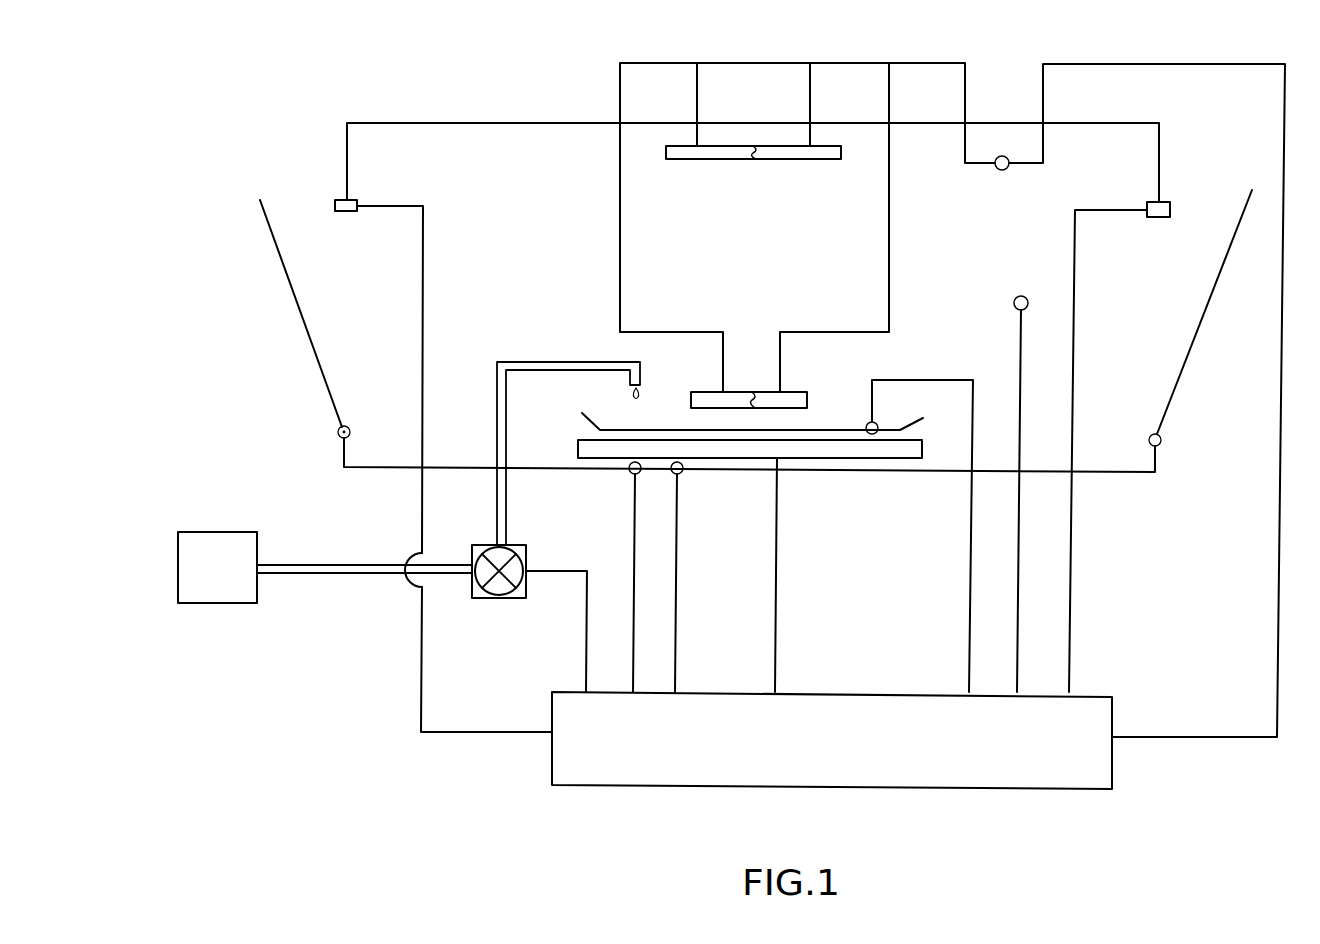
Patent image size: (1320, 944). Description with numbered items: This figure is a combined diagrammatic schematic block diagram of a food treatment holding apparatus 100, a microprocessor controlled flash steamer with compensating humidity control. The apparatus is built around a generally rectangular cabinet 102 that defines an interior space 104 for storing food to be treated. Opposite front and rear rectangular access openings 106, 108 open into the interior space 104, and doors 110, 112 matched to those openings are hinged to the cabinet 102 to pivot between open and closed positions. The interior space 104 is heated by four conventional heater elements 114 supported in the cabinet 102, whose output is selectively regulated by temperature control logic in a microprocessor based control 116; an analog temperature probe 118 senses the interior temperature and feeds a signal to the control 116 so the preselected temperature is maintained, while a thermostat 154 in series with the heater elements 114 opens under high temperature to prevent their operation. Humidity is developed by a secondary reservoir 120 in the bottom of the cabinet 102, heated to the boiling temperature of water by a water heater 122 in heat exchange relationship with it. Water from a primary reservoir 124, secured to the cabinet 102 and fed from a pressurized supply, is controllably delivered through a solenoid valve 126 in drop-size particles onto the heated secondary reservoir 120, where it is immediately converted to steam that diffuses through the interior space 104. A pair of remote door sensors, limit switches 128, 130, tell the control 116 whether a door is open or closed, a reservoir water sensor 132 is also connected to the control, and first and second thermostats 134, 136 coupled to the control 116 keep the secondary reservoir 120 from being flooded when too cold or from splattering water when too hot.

The food treatment holding apparatus 100 is at (473, 102).
The cabinet 102 is at (375, 121).
The interior space 104 is at (528, 162).
The front access opening 106 is at (312, 247).
The rear access opening 108 is at (1186, 255).
The door 110 is at (298, 311).
The door 112 is at (1188, 362).
The heater elements 114 is at (790, 160).
The microprocessor based control 116 is at (1090, 790).
The analog temperature probe 118 is at (1016, 298).
The secondary reservoir 120 is at (923, 418).
The water heater 122 is at (720, 450).
The primary reservoir 124 is at (213, 603).
The solenoid valve 126 is at (480, 598).
The limit switch 128 is at (355, 212).
The limit switch 130 is at (1151, 218).
The reservoir water sensor 132 is at (870, 422).
The first thermostat 134 is at (630, 473).
The second thermostat 136 is at (681, 474).
The thermostat 154 is at (1002, 156).